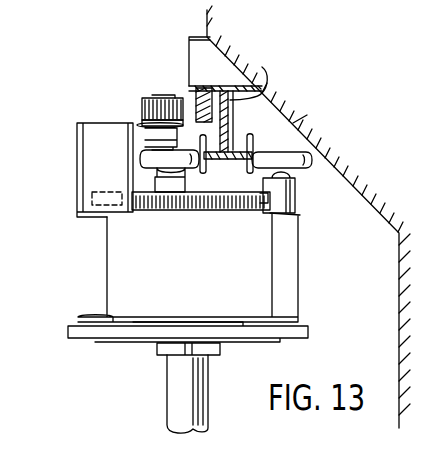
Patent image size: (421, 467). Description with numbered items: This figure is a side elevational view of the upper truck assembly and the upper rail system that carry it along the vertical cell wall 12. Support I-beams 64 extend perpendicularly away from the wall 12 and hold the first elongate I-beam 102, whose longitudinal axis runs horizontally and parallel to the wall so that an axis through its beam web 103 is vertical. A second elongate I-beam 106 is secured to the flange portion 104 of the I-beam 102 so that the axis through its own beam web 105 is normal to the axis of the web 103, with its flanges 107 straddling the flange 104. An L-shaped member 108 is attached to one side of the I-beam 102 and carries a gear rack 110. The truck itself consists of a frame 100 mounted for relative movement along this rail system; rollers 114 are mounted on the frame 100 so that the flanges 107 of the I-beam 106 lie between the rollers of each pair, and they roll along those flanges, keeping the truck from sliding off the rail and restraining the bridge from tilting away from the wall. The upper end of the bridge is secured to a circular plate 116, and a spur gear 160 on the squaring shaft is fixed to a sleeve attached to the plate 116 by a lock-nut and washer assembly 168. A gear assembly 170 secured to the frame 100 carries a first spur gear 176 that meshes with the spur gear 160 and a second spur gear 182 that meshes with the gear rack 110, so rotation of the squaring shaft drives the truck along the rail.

The vertical cell wall 12 is at (102, 93).
The support I-beam 64 is at (189, 58).
The frame 100 is at (210, 262).
The first elongate I-beam 102 is at (235, 93).
The beam web 103 is at (267, 69).
The flange portion 104 is at (317, 116).
The beam web 105 is at (210, 160).
The second elongate I-beam 106 is at (230, 179).
The flanges 107 is at (255, 142).
The L-shaped member 108 is at (213, 84).
The gear rack 110 is at (193, 99).
The second pair of rollers 114 is at (140, 160).
The circular plate 116 is at (308, 331).
The spur gear 160 is at (262, 212).
The lock-nut and washer assembly 168 is at (216, 349).
The gear assembly 170 is at (197, 408).
The first spur gear 176 is at (142, 206).
The second spur gear 182 is at (142, 105).